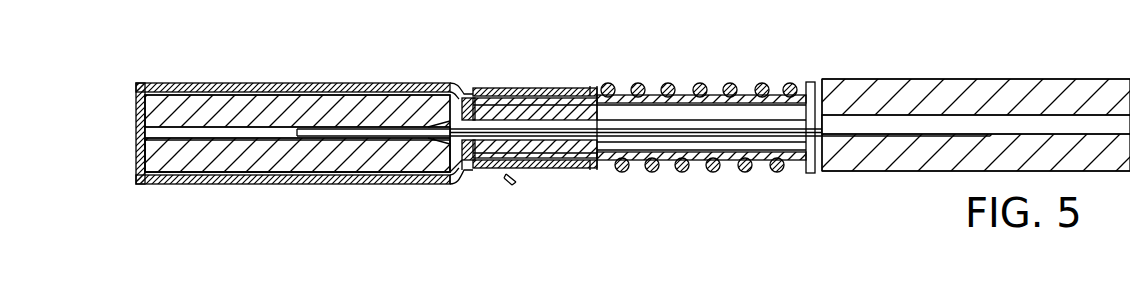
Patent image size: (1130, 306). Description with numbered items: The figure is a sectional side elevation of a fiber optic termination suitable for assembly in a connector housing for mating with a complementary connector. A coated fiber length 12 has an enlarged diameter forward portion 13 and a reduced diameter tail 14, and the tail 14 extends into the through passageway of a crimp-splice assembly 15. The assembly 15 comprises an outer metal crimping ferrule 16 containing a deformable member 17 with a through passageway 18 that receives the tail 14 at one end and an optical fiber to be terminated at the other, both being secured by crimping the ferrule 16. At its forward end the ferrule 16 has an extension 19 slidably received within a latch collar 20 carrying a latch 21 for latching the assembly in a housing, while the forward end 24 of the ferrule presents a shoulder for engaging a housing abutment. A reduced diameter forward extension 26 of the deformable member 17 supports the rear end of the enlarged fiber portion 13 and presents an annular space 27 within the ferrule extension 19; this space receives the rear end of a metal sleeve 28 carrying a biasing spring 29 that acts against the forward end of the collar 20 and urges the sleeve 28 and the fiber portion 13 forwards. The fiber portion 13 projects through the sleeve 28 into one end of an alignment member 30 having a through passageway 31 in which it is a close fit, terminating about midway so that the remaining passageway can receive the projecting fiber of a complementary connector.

The coated fiber length 12 is at (543, 128).
The enlarged diameter forward portion 13 is at (735, 122).
The reduced diameter tail 14 is at (365, 138).
The crimp-splice assembly 15 is at (347, 160).
The outer metal crimping ferrule 16 is at (312, 183).
The deformable member 17 is at (233, 163).
The through passageway 18 is at (243, 135).
The extension 19 is at (508, 95).
The latch collar 20 is at (590, 90).
The latch 21 is at (512, 180).
The forward end 24 is at (470, 172).
The forward extension 26 is at (466, 107).
The annular space 27 is at (465, 155).
The metal sleeve 28 is at (680, 100).
The biasing spring 29 is at (718, 92).
The alignment member 30 is at (975, 95).
The through passageway 31 is at (1040, 122).